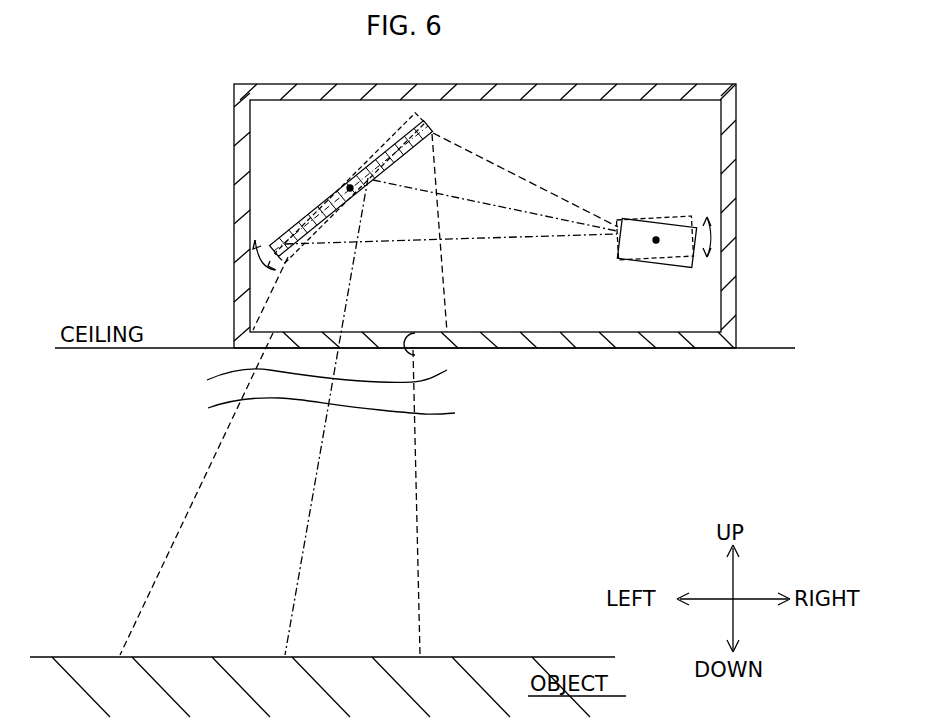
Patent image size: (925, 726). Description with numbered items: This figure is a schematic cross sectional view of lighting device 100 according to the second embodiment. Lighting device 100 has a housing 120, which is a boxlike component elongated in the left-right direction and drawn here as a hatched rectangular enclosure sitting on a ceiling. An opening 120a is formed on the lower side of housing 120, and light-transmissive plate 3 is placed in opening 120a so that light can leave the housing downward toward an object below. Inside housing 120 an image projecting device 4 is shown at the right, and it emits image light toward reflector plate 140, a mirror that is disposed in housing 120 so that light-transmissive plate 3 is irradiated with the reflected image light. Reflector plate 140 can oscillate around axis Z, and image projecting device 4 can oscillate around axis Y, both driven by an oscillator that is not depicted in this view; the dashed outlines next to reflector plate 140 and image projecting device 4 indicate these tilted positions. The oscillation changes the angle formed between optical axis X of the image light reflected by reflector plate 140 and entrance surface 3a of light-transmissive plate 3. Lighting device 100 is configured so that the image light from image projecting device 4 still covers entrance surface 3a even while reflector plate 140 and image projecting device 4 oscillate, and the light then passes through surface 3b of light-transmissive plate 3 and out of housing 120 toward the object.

The lighting device 100 is at (162, 131).
The housing 120 is at (738, 134).
The opening 120a is at (423, 355).
The reflector plate 140 is at (372, 178).
The image projecting device 4 is at (680, 217).
The light-transmissive plate 3 is at (342, 356).
The entrance surface 3a is at (300, 331).
The light passing through opening 3b is at (298, 350).
The optical axis X is at (513, 207).
The axis Y is at (654, 238).
The axis Z is at (345, 183).